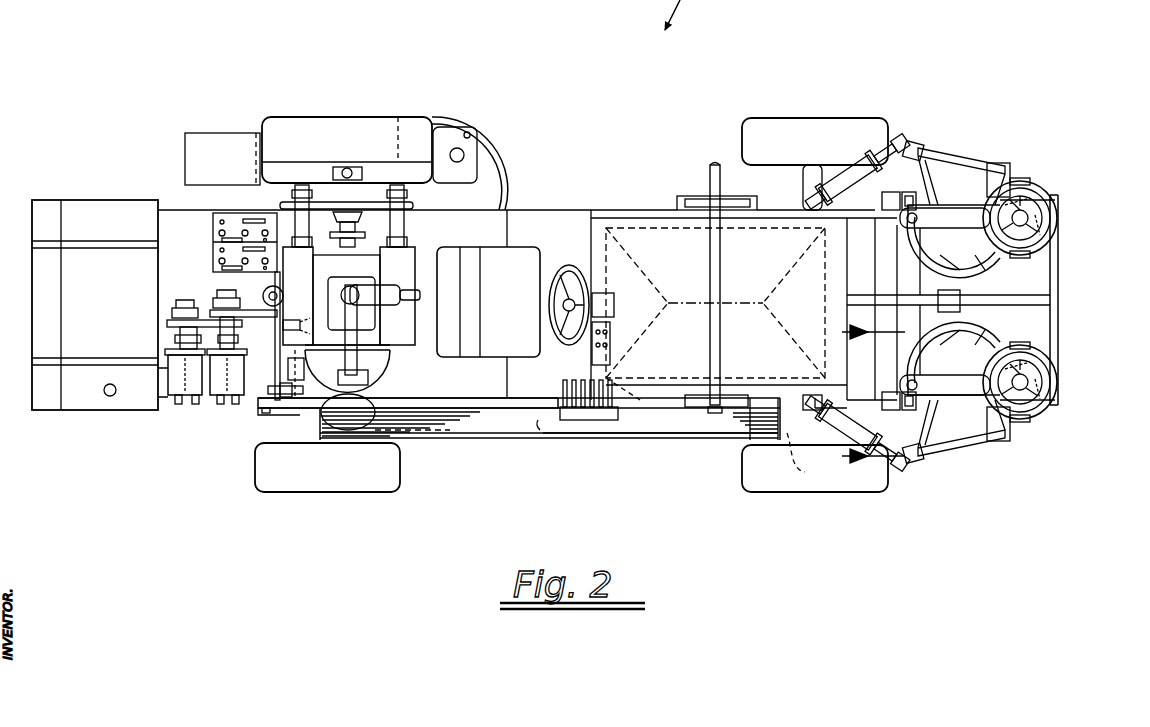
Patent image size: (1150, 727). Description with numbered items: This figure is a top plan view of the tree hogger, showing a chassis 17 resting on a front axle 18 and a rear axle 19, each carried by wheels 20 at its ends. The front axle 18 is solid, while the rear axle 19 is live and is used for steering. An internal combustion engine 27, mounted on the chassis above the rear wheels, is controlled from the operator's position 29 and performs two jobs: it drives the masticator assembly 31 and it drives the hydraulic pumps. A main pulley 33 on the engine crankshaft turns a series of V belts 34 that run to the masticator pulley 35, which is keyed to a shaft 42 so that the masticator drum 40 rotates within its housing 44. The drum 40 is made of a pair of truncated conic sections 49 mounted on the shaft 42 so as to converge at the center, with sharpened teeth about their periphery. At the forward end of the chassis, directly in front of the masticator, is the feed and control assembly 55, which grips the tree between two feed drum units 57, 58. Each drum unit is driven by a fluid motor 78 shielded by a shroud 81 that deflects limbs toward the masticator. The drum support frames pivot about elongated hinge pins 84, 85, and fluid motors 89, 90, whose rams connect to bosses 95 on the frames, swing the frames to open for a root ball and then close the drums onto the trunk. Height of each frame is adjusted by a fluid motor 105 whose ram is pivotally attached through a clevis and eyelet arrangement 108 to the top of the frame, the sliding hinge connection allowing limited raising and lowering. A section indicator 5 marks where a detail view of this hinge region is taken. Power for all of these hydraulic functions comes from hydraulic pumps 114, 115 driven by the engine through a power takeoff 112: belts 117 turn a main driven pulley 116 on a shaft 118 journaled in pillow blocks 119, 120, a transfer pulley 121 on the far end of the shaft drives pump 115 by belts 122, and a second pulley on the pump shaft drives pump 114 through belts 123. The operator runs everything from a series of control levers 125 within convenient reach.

The section line 5- 5 is at (862, 397).
The chassis 17 is at (548, 210).
The front axle 18 is at (805, 180).
The rear axle 19 is at (322, 422).
The wheels 20 is at (264, 124).
The internal combustion engine 27 is at (405, 263).
The operator's position 29 is at (535, 382).
The masticator assembly 31 is at (668, 390).
The main pulley 33 is at (550, 424).
The belts 34 is at (592, 412).
The masticator pulley 35 is at (800, 458).
The masticator drum 40 is at (655, 375).
The shaft 42 is at (710, 178).
The housing 44 is at (645, 218).
The truncated conic sections 49 is at (640, 330).
The feed and control assembly 55 is at (1003, 103).
The feed drum unit 57 is at (1067, 180).
The feed drum unit 58 is at (1062, 433).
The fluid motors 78 is at (1022, 218).
The shrouds 81 is at (1052, 256).
The hinge pin 84 is at (908, 217).
The hinge pin 85 is at (908, 385).
The fluid motor 89 is at (850, 172).
The fluid motor 90 is at (868, 425).
The boss 95 is at (925, 150).
The fluid motor 105 is at (882, 202).
The clevis and eyelet arrangement 108 is at (928, 404).
The power takeoff 112 is at (262, 415).
The hydraulic pump 114 is at (183, 408).
The hydraulic pump 115 is at (232, 408).
The main driven pulley 116 is at (298, 396).
The belts 117 is at (305, 397).
The shaft 118 is at (282, 352).
The pillow block 119 is at (284, 366).
The pillow block 120 is at (301, 325).
The transfer pulley 121 is at (322, 292).
The belts 122 is at (250, 308).
The belts 123 is at (205, 306).
The control levers 125 is at (575, 383).